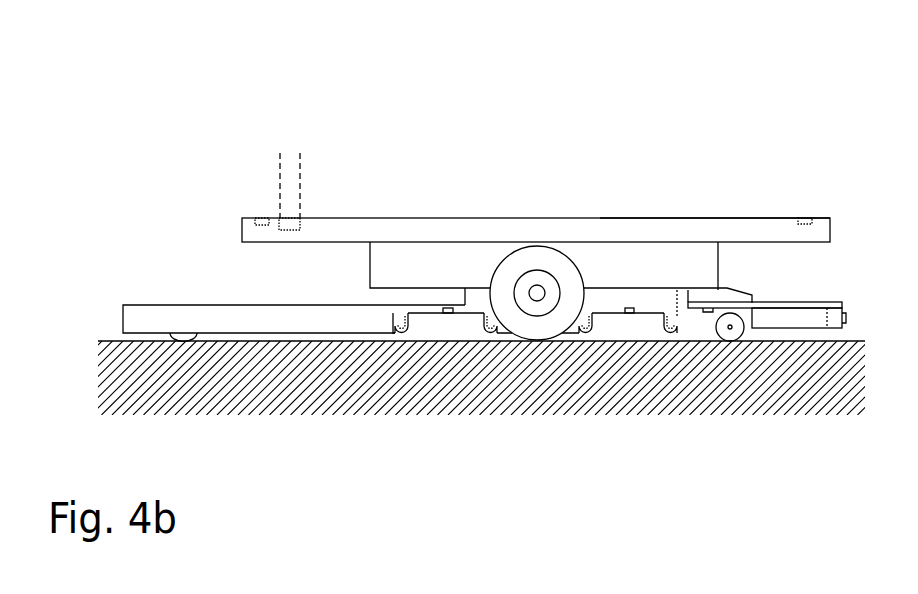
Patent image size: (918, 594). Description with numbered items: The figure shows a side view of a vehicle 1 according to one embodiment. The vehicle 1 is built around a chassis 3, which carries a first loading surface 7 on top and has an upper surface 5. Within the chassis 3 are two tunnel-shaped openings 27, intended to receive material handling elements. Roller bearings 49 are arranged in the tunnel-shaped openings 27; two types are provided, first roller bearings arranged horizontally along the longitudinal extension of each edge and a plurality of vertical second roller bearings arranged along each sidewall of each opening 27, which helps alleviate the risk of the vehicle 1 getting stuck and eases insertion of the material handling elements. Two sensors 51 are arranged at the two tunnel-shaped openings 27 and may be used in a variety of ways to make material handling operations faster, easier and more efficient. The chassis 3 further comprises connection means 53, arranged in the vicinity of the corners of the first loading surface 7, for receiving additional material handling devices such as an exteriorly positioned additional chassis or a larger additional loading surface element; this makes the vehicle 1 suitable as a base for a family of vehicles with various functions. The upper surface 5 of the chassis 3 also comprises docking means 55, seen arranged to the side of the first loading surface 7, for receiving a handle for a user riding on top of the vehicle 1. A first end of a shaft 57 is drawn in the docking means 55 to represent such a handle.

The vehicle 1 is at (393, 110).
The chassis 3 is at (157, 268).
The upper surface 5 is at (540, 210).
The first loading surface 7 is at (695, 218).
The tunnel-shaped opening 27 is at (447, 322).
The roller bearing 49 is at (402, 340).
The sensor 51 is at (443, 310).
The connection means 53 is at (257, 222).
The docking means 55 is at (293, 226).
The shaft 57 is at (286, 168).